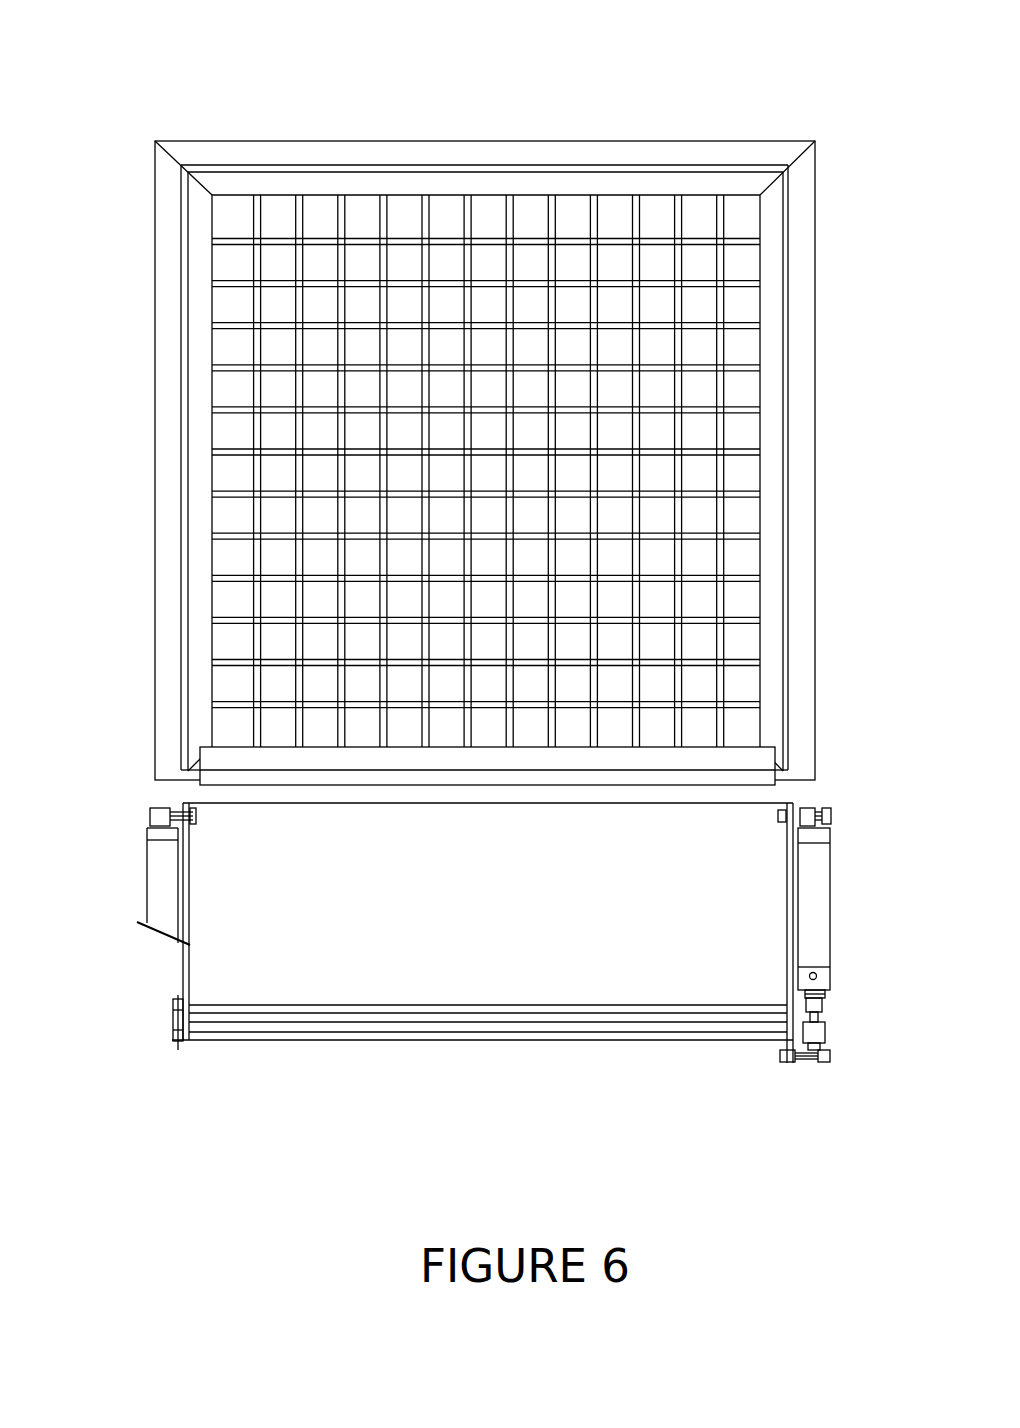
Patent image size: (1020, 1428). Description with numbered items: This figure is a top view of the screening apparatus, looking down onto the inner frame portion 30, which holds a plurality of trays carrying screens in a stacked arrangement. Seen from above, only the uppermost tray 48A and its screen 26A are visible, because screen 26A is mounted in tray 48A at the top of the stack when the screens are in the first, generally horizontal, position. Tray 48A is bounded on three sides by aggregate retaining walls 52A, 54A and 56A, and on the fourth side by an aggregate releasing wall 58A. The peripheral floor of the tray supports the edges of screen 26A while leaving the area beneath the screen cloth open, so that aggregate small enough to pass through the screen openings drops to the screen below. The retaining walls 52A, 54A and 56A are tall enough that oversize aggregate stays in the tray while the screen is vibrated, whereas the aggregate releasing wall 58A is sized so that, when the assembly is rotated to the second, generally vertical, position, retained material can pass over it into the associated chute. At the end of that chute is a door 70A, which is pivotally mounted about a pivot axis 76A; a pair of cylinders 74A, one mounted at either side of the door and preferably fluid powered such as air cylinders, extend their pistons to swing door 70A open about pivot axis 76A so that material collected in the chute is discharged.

The inner frame portion 30 is at (468, 62).
The tray 48A is at (308, 132).
The screen 26A is at (531, 234).
The aggregate retaining wall 54A is at (660, 150).
The aggregate retaining wall 52A is at (165, 415).
The aggregate retaining wall 56A is at (805, 440).
The aggregate releasing wall 58A is at (515, 762).
The door 70A is at (509, 1026).
The cylinders 74A is at (152, 877).
The pivot axis 76A is at (166, 1008).